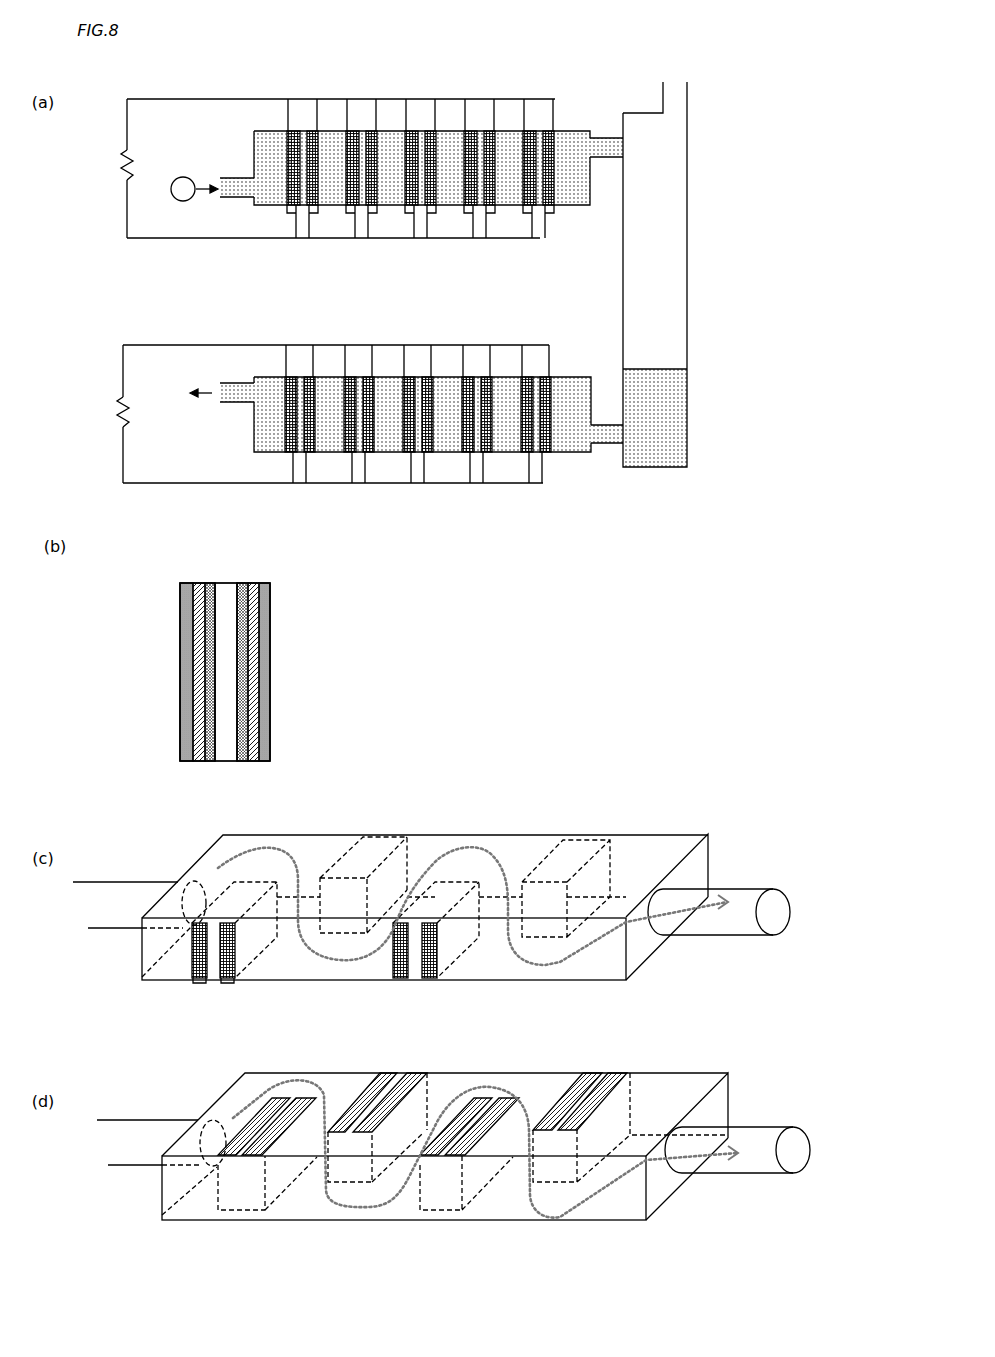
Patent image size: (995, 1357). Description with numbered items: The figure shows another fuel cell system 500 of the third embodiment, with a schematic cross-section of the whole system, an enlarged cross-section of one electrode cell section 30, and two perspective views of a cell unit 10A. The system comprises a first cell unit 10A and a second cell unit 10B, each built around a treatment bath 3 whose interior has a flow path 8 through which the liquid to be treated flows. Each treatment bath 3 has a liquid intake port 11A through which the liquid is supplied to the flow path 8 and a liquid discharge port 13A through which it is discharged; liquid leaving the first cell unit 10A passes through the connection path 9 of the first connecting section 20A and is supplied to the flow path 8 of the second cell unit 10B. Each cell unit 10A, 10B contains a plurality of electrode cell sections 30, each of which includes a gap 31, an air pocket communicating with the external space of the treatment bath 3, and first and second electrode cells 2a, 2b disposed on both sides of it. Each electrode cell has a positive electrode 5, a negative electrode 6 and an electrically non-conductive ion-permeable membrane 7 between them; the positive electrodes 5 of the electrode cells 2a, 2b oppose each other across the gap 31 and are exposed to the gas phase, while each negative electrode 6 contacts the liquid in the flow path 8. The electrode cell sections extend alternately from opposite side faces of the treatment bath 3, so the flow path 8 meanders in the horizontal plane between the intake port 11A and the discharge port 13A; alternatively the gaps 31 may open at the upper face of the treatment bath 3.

The fuel cell system 500 is at (499, 123).
The first cell unit 10A is at (462, 548).
The second cell unit 10B is at (359, 378).
The first connecting section 20A is at (700, 274).
The connection path 9 is at (649, 277).
The flow path 8 is at (444, 179).
The treatment bath 3 is at (338, 130).
The liquid intake port 11A is at (242, 182).
The liquid discharge port 13A is at (610, 135).
The electrode cell section 30 is at (252, 639).
The first electrode cell 2a is at (290, 123).
The second electrode cell 2b is at (315, 125).
The gap 31 is at (300, 167).
The positive electrode 5 is at (208, 582).
The negative electrode 6 is at (185, 582).
The ion-permeable membrane 7 is at (197, 582).